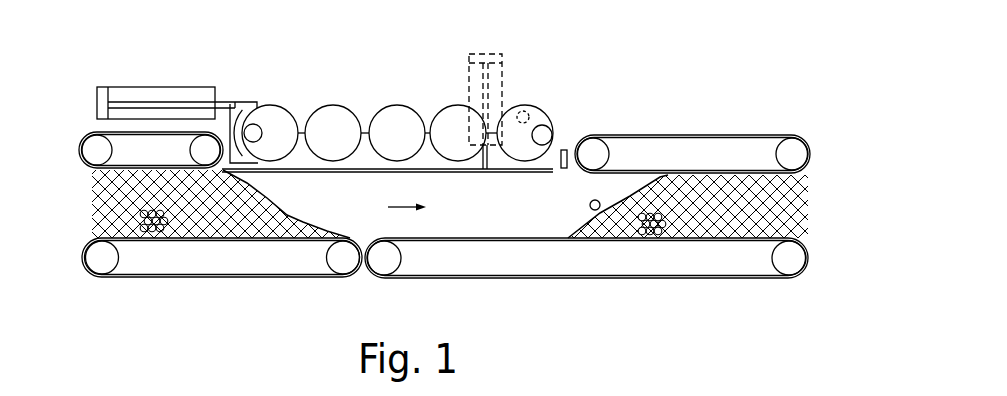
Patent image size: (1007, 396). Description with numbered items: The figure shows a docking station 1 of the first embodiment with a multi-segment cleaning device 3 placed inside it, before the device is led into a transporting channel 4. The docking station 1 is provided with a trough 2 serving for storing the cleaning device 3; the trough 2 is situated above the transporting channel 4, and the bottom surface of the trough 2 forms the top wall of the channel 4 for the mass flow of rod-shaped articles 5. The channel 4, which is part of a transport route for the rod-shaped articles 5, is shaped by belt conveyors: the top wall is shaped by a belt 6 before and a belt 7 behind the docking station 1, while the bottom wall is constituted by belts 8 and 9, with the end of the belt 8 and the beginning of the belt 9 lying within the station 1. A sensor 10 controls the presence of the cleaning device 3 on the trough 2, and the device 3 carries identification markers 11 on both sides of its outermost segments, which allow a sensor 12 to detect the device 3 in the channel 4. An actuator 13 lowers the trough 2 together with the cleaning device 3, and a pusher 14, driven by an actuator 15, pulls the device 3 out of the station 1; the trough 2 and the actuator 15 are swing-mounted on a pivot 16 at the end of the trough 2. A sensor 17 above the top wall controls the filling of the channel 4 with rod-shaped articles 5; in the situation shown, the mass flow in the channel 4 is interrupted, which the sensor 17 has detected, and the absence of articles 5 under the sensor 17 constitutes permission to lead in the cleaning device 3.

The docking station 1 is at (572, 102).
The trough 2 is at (518, 172).
The multi-segment cleaning device 3 is at (337, 110).
The transporting channel 4 is at (345, 205).
The rod-shaped articles 5 is at (645, 238).
The belt 6 is at (97, 132).
The belt 7 is at (728, 135).
The belt 8 is at (167, 277).
The belt 9 is at (690, 277).
The sensor 10 is at (523, 110).
The identification markers 11 is at (258, 128).
The sensor 12 is at (590, 210).
The actuator 13 is at (473, 77).
The pusher 14 is at (233, 112).
The actuator 15 is at (128, 95).
The pivot 16 is at (233, 177).
The sensor 17 is at (568, 160).